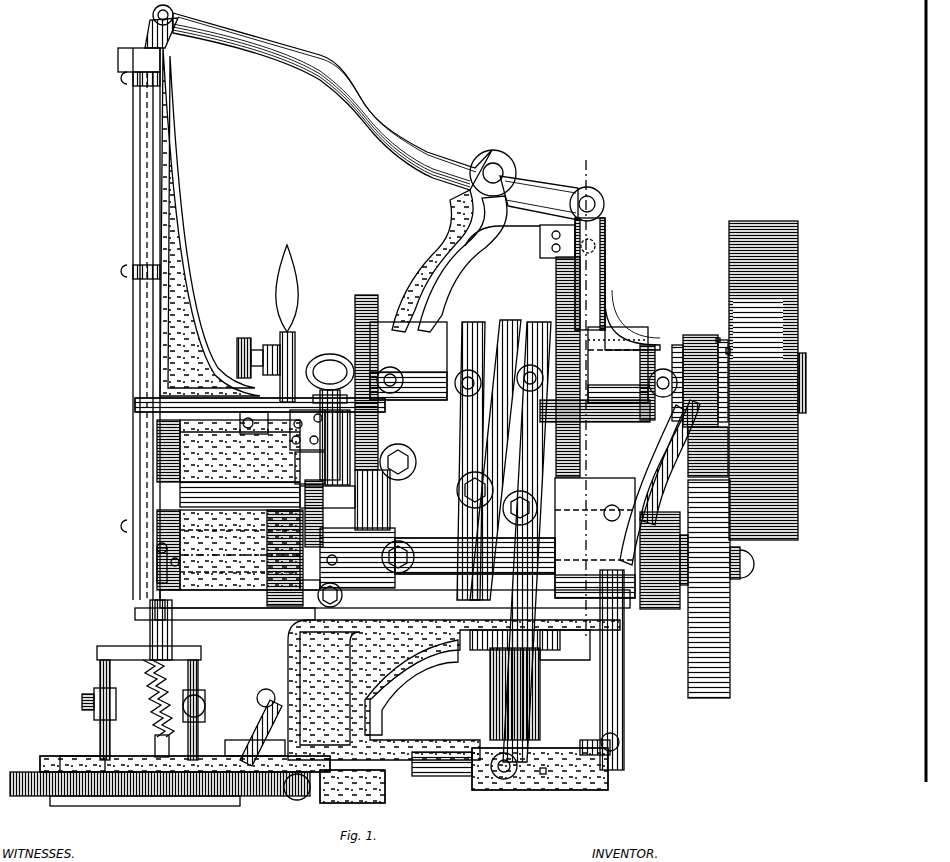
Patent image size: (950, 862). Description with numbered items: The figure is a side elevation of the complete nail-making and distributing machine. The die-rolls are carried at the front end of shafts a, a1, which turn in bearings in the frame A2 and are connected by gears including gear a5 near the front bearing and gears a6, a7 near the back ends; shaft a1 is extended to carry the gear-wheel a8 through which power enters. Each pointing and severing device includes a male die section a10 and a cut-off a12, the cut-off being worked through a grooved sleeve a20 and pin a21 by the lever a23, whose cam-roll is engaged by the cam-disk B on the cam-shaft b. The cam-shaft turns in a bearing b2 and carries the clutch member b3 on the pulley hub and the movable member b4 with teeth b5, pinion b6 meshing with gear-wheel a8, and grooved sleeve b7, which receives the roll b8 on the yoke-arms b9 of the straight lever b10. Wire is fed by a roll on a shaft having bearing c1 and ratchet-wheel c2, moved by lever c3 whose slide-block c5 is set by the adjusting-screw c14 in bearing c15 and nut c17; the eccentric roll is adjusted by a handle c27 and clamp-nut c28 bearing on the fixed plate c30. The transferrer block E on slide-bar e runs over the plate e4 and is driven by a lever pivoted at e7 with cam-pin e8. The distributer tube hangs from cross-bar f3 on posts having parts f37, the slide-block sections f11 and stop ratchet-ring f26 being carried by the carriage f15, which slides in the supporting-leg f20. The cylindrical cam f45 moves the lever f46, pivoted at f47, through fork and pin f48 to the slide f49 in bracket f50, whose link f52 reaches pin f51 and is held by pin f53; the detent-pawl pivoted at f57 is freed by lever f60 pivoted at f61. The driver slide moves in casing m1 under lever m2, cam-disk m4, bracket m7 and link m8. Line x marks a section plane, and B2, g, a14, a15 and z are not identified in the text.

The casing m1 is at (189, 324).
The lever m2 is at (318, 97).
The cam-disk m4 is at (568, 367).
The bracket m7 is at (600, 284).
The link m8 is at (600, 214).
The section line x x is at (583, 398).
The cam-shaft b is at (460, 380).
The bearing b2 is at (595, 374).
The clutch member b3 is at (720, 338).
The movable member of the clutch b4 is at (716, 338).
The clutch teeth b5 is at (740, 348).
The pinion b6 is at (701, 452).
The grooved sleeve b7 is at (658, 348).
The roll b8 is at (654, 381).
The yoke-arms b9 is at (659, 482).
The straight lever b10 is at (624, 650).
The cam-disk B is at (366, 382).
The main gear wheel B2 is at (767, 380).
The lever g is at (445, 450).
The cylindrical cam f45 is at (540, 322).
The lever f46 is at (490, 686).
The pivot f47 is at (569, 538).
The fork and pin f48 is at (504, 780).
The slide f49 is at (552, 766).
The arm or bracket f50 is at (608, 772).
The pin f53 is at (442, 773).
The pivot f57 is at (352, 768).
The supporting-leg f20 is at (454, 690).
The cross-bar f3 is at (141, 703).
The post part f37 is at (200, 674).
The pin f51 is at (152, 708).
The stop ratchet-ring f26 is at (70, 756).
The detent-operating lever f60 is at (255, 733).
The pivot f61 is at (259, 694).
The carriage f15 is at (170, 776).
The slide-block section f11 is at (297, 787).
The link f52 is at (145, 808).
The shaft a is at (475, 547).
The shaft a1 is at (228, 550).
The gear a5 is at (279, 558).
The gear a6 is at (314, 504).
The gear a7 is at (660, 551).
The gear-wheel a8 is at (730, 596).
The male section of drawing-die a10 is at (188, 564).
The cut-off a12 is at (160, 546).
The block a14 is at (357, 497).
The sleeve a15 is at (372, 488).
The grooved sleeve a20 is at (357, 549).
The pin a21 is at (339, 538).
The lever a23 is at (411, 477).
The frame A2 is at (260, 405).
The bearing c1 is at (240, 475).
The ratchet-wheel c2 is at (228, 451).
The lever c3 is at (307, 418).
The slide-block c5 is at (306, 447).
The adjusting-screw c14 is at (330, 417).
The bearing c15 is at (332, 468).
The nut c17 is at (266, 423).
The handle c27 is at (300, 290).
The clamp-nut c28 is at (244, 336).
The fixed plate c30 is at (273, 349).
The slide-bar e is at (454, 586).
The plate e4 is at (382, 625).
The pivot e7 is at (471, 497).
The cam-pin e8 is at (332, 604).
The bracket z is at (147, 609).
The block E is at (289, 570).